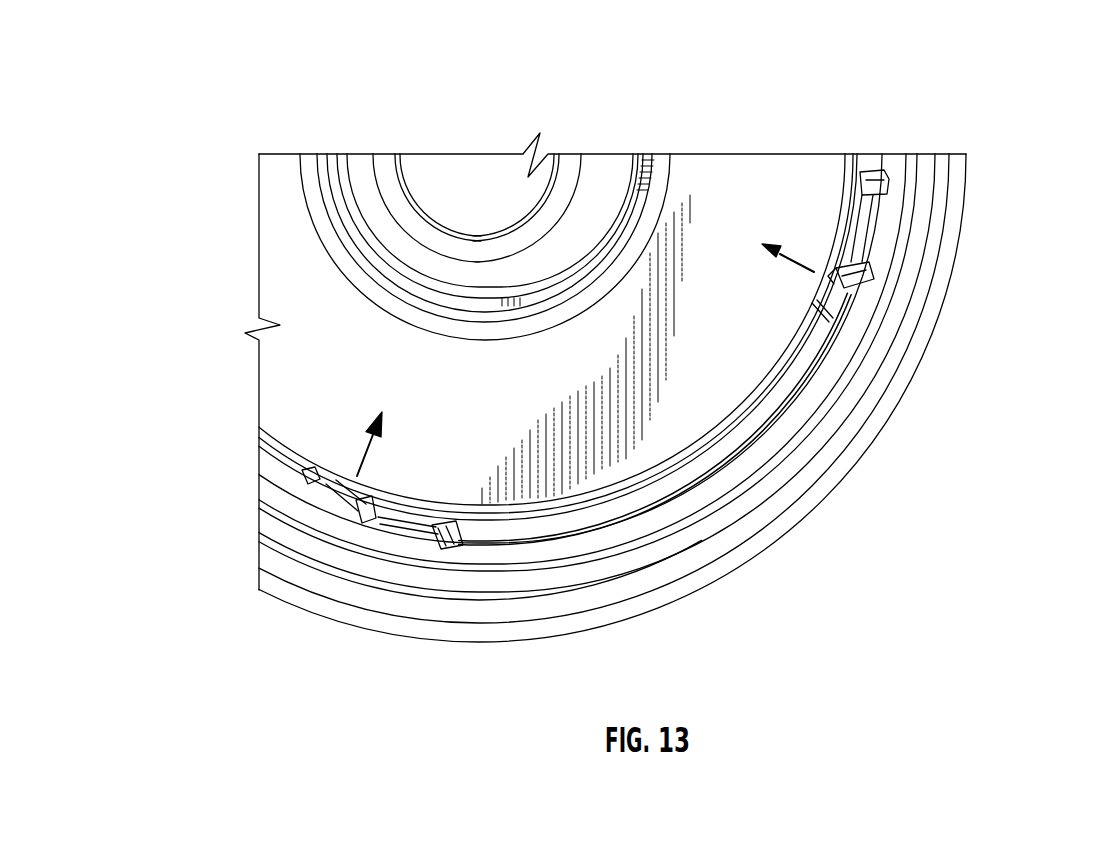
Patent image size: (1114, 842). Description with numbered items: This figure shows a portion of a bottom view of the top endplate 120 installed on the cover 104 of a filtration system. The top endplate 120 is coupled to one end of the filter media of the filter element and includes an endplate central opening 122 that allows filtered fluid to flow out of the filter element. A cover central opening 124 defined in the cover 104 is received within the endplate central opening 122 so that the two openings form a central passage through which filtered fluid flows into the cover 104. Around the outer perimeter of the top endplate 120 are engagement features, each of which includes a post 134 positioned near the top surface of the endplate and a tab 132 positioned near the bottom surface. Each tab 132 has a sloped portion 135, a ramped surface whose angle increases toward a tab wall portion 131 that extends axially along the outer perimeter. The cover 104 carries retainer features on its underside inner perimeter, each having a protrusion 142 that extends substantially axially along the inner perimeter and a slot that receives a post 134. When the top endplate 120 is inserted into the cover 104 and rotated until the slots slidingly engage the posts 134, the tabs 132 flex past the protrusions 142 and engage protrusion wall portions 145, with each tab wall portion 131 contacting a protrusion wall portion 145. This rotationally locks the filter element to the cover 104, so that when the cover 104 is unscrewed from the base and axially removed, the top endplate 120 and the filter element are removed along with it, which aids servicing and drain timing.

The cover 104 is at (668, 398).
The top endplate 120 is at (775, 173).
The endplate central opening 122 is at (652, 195).
The cover central opening 124 is at (640, 173).
The tab wall portion 131 is at (647, 457).
The tab 132 is at (605, 462).
The post 134 is at (726, 394).
The sloped portion 135 is at (182, 507).
The protrusion 142 is at (720, 457).
The protrusion wall portion 145 is at (626, 295).